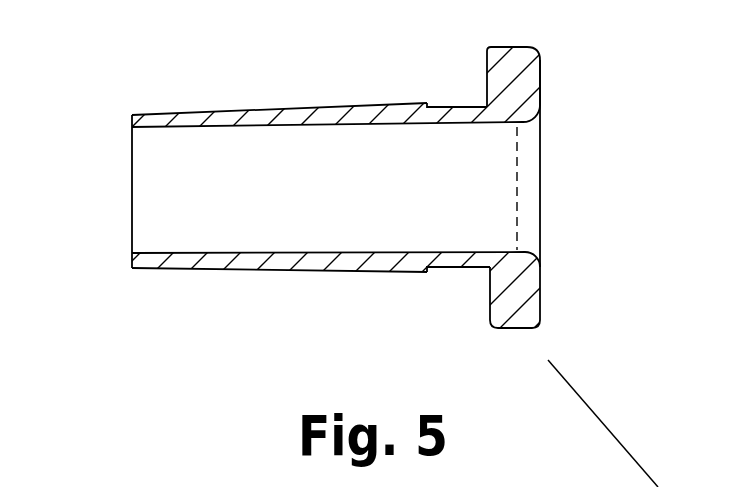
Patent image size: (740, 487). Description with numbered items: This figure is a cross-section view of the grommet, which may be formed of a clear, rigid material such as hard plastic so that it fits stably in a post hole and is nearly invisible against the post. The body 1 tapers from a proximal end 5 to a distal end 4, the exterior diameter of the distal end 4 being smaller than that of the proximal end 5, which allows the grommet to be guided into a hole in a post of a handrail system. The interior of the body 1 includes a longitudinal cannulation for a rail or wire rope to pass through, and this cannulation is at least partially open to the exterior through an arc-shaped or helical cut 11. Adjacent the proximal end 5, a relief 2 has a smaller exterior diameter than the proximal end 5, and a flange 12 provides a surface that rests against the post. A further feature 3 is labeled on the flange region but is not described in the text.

The body 1 is at (218, 108).
The relief 2 is at (452, 107).
The lower flange portion 3 is at (490, 312).
The distal end 4 is at (130, 268).
The proximal end 5 is at (422, 270).
The arc-shaped or helical cut 11 is at (168, 187).
The flange 12 is at (535, 53).